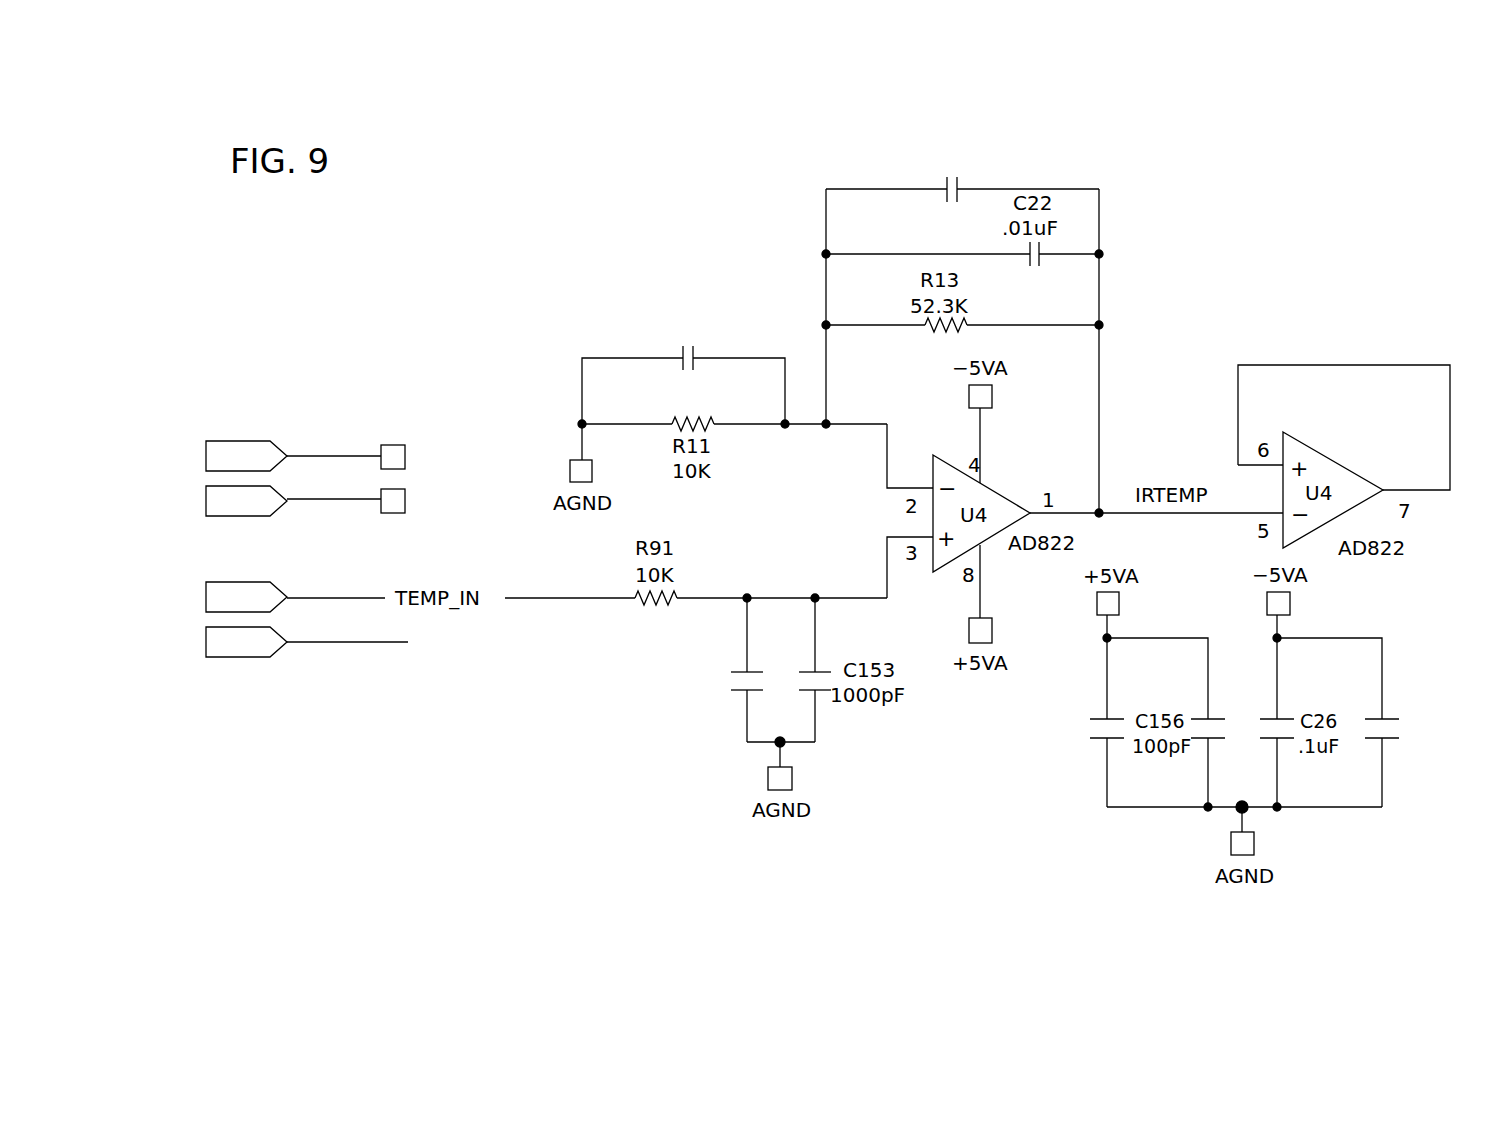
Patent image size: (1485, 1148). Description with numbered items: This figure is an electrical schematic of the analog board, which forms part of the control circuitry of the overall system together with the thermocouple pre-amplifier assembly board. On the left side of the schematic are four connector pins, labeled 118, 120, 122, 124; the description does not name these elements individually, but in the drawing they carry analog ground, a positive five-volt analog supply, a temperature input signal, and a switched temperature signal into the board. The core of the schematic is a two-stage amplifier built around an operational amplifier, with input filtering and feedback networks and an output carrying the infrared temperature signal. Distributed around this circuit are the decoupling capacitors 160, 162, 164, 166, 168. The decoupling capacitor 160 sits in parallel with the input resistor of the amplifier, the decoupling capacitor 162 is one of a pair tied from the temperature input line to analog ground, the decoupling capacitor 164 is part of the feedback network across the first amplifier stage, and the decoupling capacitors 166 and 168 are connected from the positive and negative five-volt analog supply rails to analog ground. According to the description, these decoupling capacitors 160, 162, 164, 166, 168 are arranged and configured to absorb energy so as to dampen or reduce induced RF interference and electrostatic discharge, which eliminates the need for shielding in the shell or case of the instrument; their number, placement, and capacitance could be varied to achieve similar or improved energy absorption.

The connector J1 pin 1 (AGND) 118 is at (204, 453).
The connector J1 pin 2 (+5VA) 120 is at (204, 498).
The connector J1 pin 3 (TEMP_IN) 122 is at (204, 595).
The connector J1 pin 4 (SW_TEMP) 124 is at (204, 640).
The decoupling capacitor 160 is at (698, 363).
The decoupling capacitor 162 is at (740, 693).
The decoupling capacitor 164 is at (942, 196).
The decoupling capacitor 166 is at (1100, 742).
The decoupling capacitor 168 is at (1388, 718).